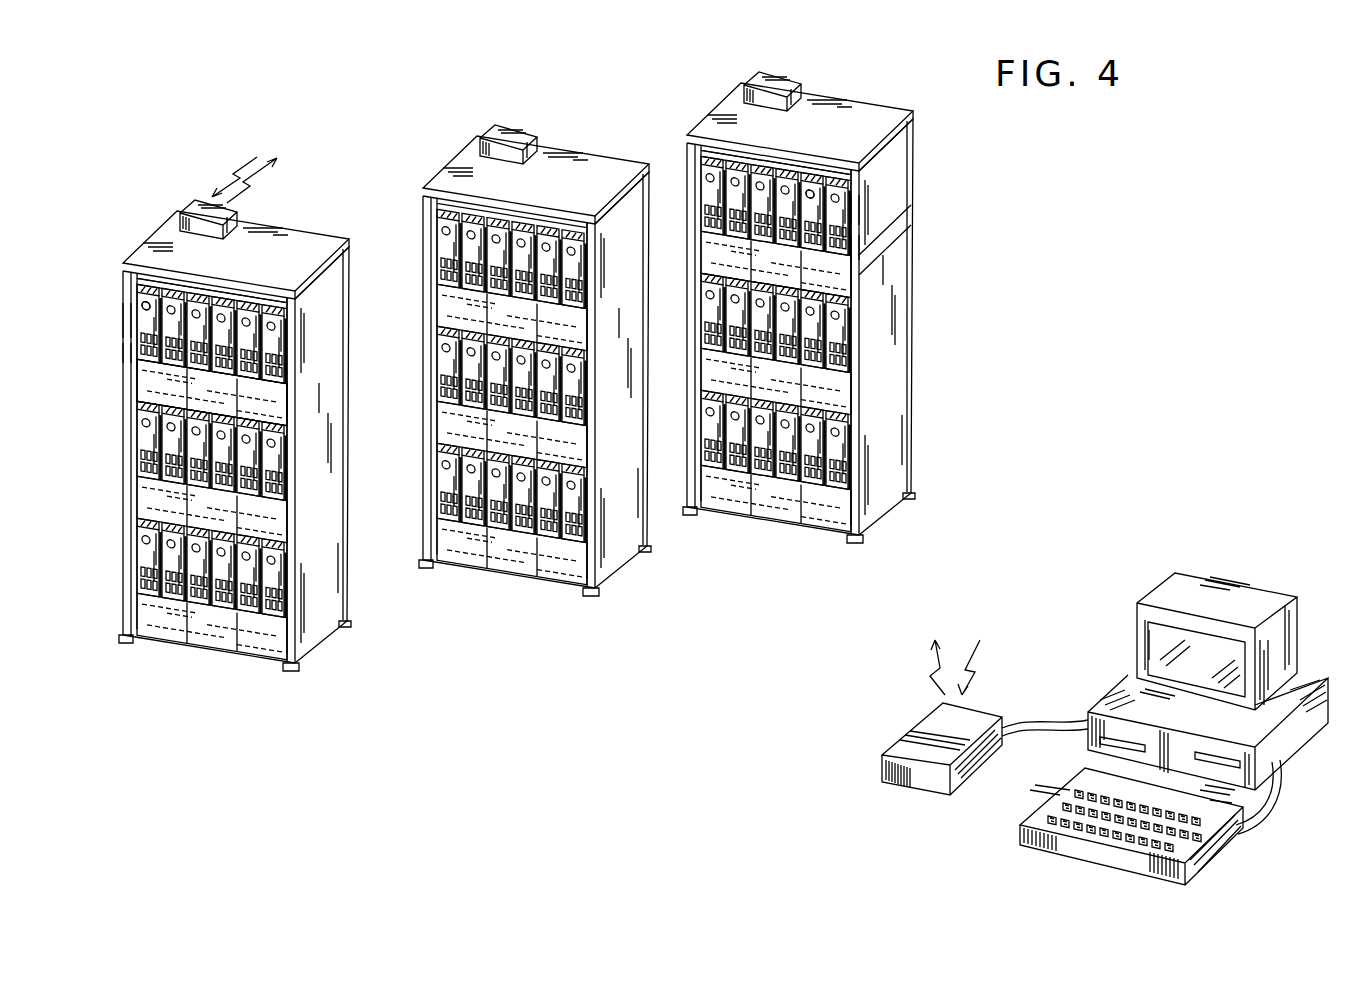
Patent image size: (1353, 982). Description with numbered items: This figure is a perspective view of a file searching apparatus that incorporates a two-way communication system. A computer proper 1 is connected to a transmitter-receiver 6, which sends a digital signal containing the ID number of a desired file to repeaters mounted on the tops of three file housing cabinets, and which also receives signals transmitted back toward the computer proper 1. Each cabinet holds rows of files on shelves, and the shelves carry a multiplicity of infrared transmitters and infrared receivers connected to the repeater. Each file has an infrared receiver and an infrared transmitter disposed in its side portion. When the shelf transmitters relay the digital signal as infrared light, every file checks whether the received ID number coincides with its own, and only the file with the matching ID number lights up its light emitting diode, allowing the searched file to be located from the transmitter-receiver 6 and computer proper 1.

The computer proper 1 is at (1305, 686).
The transmitter-receiver 6 is at (933, 723).